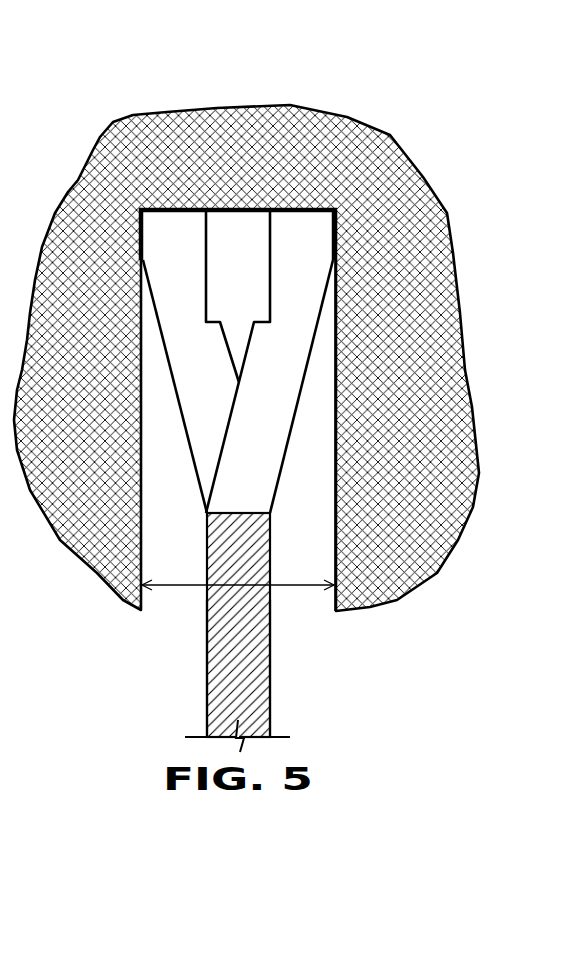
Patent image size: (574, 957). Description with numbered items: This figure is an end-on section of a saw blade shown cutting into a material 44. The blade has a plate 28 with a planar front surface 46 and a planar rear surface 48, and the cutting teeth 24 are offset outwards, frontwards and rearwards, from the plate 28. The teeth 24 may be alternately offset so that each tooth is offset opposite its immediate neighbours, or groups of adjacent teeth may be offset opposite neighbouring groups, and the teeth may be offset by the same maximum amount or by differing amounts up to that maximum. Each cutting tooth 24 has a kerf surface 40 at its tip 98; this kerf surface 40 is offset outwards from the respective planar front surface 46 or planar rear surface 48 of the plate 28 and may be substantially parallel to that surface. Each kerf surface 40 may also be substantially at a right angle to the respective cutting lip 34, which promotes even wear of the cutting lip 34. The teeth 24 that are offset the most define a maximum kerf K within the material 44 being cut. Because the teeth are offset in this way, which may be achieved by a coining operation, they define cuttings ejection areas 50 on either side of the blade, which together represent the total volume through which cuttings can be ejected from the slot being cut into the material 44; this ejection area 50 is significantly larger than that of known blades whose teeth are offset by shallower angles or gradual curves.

The material 44 is at (256, 166).
The cutting lip 34 is at (312, 208).
The tip 98 is at (188, 256).
The kerf surface 40 is at (337, 230).
The cutting tooth 24 is at (213, 360).
The cuttings ejection area 50 is at (189, 524).
The plate 28 is at (253, 678).
The planar front surface 46 is at (207, 665).
The planar rear surface 48 is at (271, 666).
The maximum kerf K is at (238, 578).